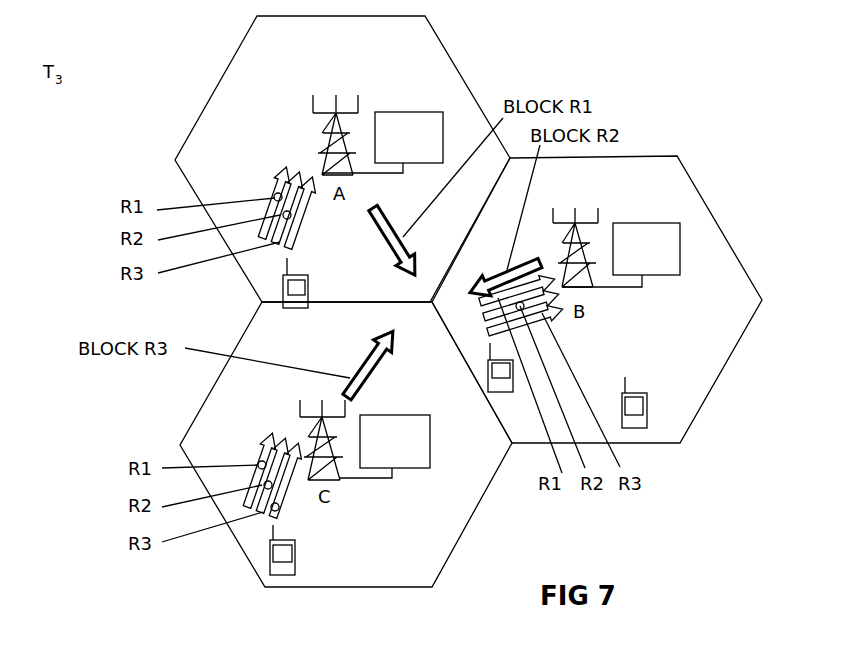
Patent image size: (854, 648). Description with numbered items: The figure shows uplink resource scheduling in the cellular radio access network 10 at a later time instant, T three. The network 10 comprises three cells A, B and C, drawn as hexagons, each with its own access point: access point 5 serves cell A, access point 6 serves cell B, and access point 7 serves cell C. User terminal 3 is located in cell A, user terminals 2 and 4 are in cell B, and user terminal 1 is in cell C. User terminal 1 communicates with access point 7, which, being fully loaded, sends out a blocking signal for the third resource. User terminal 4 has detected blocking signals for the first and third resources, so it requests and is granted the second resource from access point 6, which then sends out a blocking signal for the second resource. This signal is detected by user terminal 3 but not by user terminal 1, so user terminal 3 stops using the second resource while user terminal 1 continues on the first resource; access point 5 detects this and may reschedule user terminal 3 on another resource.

The user terminal 1 is at (272, 575).
The user terminal 2 is at (640, 428).
The user terminal 3 is at (305, 308).
The user terminal 4 is at (490, 392).
The access point 5 is at (393, 110).
The access point 6 is at (657, 222).
The access point 7 is at (420, 415).
The cellular radio access network 10 is at (554, 63).